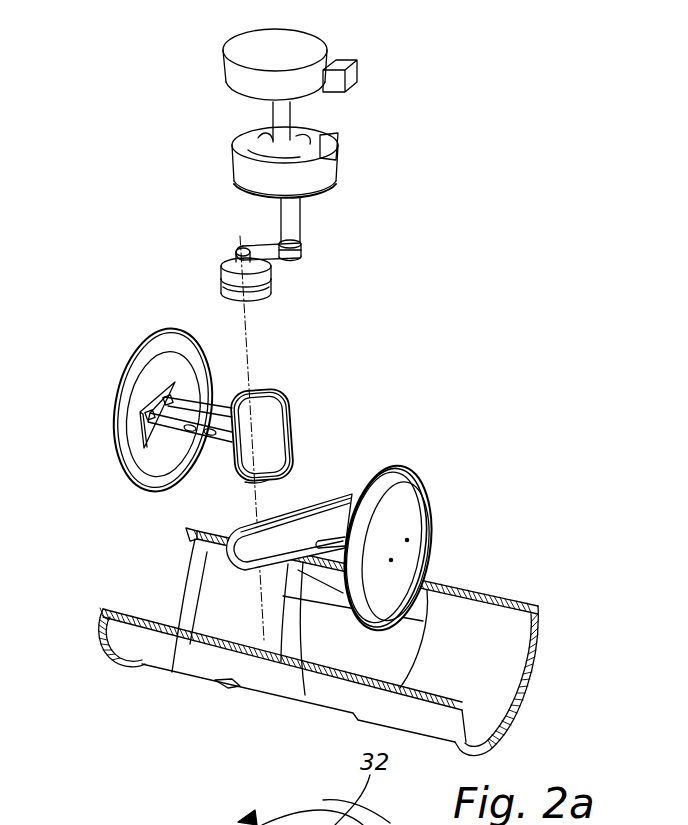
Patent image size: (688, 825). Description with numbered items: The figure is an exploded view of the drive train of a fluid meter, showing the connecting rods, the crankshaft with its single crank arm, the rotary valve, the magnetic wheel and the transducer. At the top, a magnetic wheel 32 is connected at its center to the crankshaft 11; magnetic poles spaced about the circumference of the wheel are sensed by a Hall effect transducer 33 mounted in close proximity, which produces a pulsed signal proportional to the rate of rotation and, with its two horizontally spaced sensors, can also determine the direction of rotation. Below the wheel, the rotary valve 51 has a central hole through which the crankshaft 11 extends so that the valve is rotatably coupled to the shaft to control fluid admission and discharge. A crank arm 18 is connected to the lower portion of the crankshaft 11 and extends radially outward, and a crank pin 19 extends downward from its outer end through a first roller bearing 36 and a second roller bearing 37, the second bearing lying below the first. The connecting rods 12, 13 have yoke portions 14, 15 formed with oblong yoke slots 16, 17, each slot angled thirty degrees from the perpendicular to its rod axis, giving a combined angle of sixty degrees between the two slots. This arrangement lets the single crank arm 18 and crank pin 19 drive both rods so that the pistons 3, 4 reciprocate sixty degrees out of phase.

The piston 3 is at (165, 380).
The piston 4 is at (412, 517).
The crankshaft 11 is at (285, 118).
The connecting rod 12 is at (232, 410).
The connecting rod 13 is at (305, 695).
The yoke portion 14 is at (248, 493).
The yoke portion 15 is at (172, 668).
The yoke slot 16 is at (272, 425).
The yoke slot 17 is at (337, 513).
The crank arm 18 is at (282, 262).
The crank pin 19 is at (240, 250).
The magnetic wheel 32 is at (318, 45).
The Hall effect transducer 33 is at (355, 75).
The first roller bearing 36 is at (242, 272).
The second roller bearing 37 is at (230, 290).
The rotary valve 51 is at (330, 165).